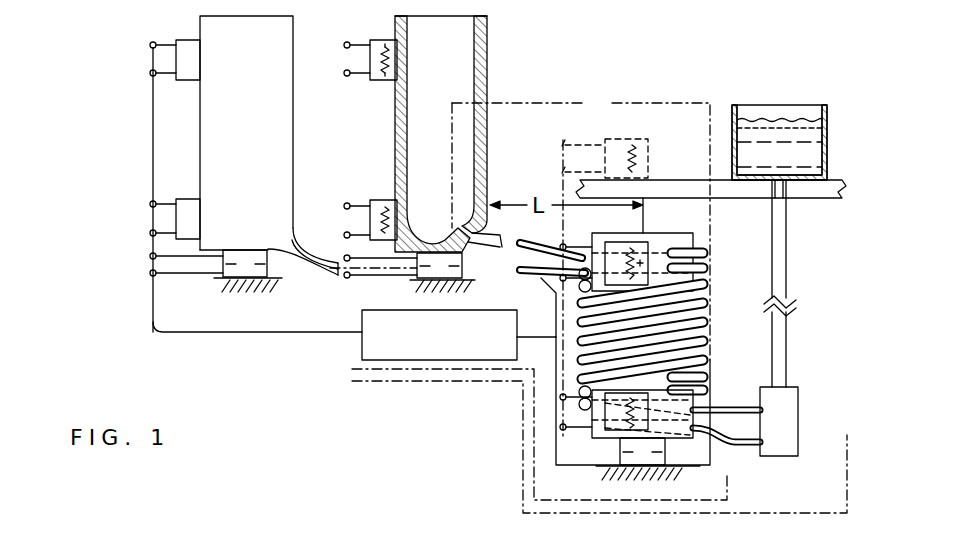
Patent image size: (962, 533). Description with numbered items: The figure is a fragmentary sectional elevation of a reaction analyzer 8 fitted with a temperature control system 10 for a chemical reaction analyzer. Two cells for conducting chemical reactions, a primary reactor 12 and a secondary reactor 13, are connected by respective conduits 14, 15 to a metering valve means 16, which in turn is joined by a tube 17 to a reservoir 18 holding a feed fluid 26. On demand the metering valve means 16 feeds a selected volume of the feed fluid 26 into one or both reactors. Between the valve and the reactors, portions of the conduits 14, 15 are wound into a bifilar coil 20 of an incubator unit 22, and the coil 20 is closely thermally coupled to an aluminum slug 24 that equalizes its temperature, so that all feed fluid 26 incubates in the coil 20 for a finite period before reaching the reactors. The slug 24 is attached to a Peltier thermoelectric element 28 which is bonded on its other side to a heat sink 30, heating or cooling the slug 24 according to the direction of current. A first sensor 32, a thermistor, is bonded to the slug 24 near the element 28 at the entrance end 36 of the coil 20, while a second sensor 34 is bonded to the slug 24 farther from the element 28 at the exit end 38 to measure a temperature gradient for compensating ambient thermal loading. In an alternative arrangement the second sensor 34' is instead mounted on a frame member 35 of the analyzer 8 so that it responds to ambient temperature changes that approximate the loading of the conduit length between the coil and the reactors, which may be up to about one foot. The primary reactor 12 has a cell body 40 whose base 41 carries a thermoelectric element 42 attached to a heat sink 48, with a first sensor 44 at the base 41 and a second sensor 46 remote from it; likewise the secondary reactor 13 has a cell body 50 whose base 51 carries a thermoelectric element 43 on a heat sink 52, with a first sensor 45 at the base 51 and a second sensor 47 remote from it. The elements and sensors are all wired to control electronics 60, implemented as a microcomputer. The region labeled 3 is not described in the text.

The dewar 3 is at (581, 283).
The reaction analyzer 8 is at (515, 458).
The temperature control system 10 is at (727, 502).
The primary reactor 12 is at (488, 62).
The secondary reactor 13 is at (292, 58).
The conduit 14 is at (556, 258).
The conduit 15 is at (300, 252).
The metering valve means 16 is at (796, 428).
The tube 17 is at (788, 298).
The reservoir 18 is at (733, 118).
The bifilar coil 20 is at (698, 292).
The incubator unit 22 is at (688, 234).
The aluminum slug 24 is at (696, 240).
The feed fluid 26 is at (810, 140).
The thermoelectric element 28 is at (667, 455).
The heat sink 30 is at (607, 465).
The first sensor 32 is at (563, 414).
The second sensor 34 is at (613, 247).
The second sensor 34' is at (626, 144).
The frame member 35 is at (681, 181).
The entrance end 36 is at (690, 430).
The exit end 38 is at (660, 262).
The cell body 40 is at (389, 140).
The base 41 is at (417, 253).
The thermoelectric element 42 is at (443, 247).
The thermoelectric element 43 is at (272, 279).
The first sensor 44 is at (370, 222).
The first sensor 45 is at (176, 222).
The second sensor 46 is at (370, 60).
The second sensor 47 is at (176, 58).
The heat sink 48 is at (410, 277).
The cell body 50 is at (194, 140).
The base 51 is at (200, 250).
The heat sink 52 is at (222, 276).
The control electronics 60 is at (362, 345).